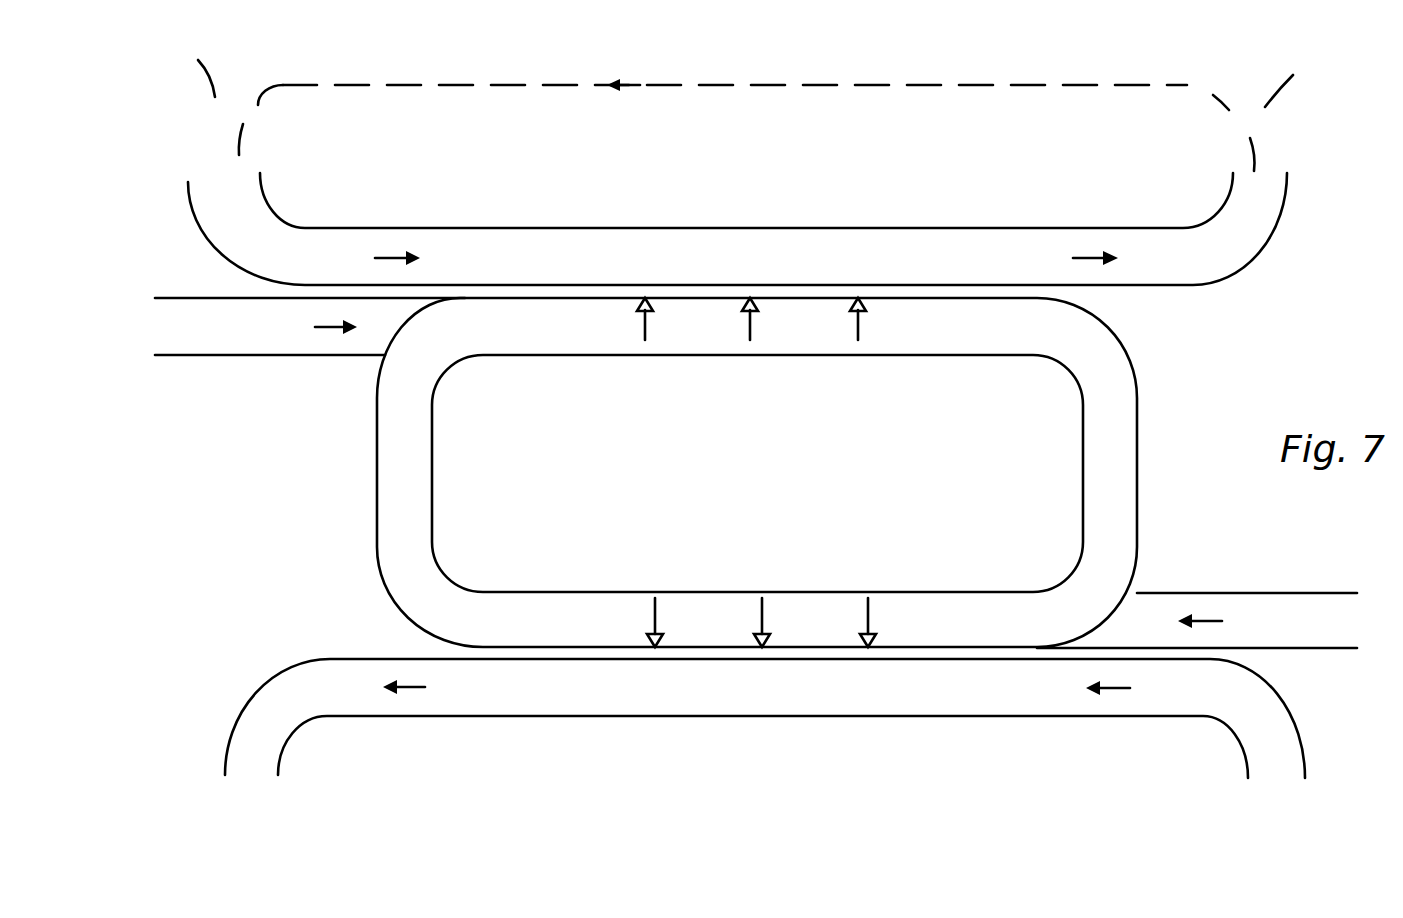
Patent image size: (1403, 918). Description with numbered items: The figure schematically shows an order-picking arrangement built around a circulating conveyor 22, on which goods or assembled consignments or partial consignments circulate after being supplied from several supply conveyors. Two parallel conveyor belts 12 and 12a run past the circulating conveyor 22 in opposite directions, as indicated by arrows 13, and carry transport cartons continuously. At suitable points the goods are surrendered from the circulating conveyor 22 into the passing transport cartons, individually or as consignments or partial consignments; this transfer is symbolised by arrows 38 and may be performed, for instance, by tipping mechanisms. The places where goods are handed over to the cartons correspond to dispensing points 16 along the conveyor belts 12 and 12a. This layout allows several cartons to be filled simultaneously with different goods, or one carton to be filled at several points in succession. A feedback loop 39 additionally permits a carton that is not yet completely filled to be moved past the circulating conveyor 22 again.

The conveyor belt 12 is at (1186, 272).
The conveyor belt 12a is at (1170, 704).
The arrows 13 is at (1090, 257).
The dispensing point 16 is at (645, 290).
The circulating conveyor 22 is at (1119, 478).
The arrows 38 is at (648, 326).
The feedback loop 39 is at (857, 87).